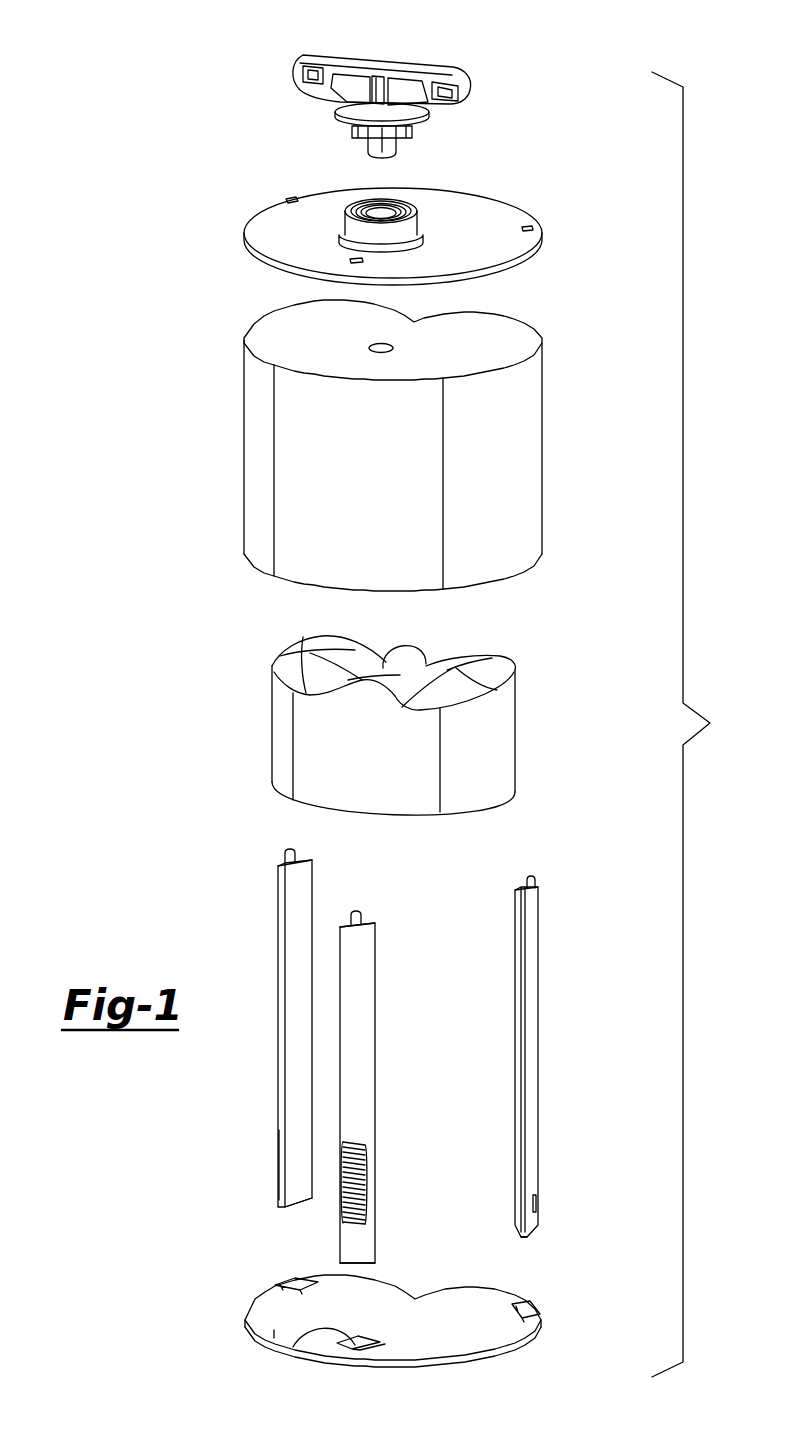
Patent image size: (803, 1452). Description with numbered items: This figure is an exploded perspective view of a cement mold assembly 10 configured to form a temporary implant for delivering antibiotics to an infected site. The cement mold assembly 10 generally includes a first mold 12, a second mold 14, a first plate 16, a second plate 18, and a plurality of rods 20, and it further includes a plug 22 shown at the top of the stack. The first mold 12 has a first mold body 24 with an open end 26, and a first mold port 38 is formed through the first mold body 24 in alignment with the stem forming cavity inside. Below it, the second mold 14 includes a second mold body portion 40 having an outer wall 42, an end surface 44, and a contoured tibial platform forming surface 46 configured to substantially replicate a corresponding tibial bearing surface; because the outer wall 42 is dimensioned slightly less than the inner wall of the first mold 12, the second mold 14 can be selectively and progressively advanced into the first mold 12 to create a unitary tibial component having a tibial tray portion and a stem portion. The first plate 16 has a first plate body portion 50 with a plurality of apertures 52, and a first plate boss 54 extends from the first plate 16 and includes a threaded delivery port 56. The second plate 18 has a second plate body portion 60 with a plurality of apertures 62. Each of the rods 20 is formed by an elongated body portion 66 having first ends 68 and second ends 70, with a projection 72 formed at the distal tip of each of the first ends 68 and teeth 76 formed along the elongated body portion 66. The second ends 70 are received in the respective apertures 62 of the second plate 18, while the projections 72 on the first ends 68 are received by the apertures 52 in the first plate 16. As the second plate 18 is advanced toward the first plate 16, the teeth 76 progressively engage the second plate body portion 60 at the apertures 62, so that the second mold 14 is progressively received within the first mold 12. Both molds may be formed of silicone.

The cement mold assembly 10 is at (697, 724).
The first mold 12 is at (397, 468).
The second mold 14 is at (399, 723).
The first plate 16 is at (404, 201).
The second plate 18 is at (390, 1305).
The rods 20 is at (401, 1048).
The plug 22 is at (381, 62).
The first mold body 24 is at (522, 488).
The open end 26 is at (508, 592).
The first mold port 38 is at (375, 348).
The second mold body portion 40 is at (485, 760).
The outer wall 42 is at (326, 779).
The end surface 44 is at (495, 802).
The tibial platform forming surface 46 is at (302, 652).
The first plate body portion 50 is at (498, 220).
The apertures 52 is at (293, 198).
The first plate boss 54 is at (425, 195).
The threaded delivery port 56 is at (390, 212).
The second plate body portion 60 is at (473, 1330).
The apertures 62 is at (292, 1283).
The elongated body portion 66 is at (278, 1062).
The first ends 68 is at (280, 887).
The second ends 70 is at (290, 1186).
The projection 72 is at (354, 913).
The teeth 76 is at (279, 1136).